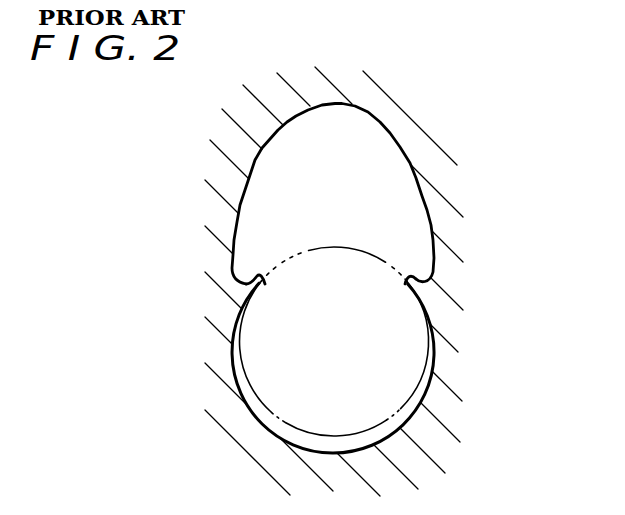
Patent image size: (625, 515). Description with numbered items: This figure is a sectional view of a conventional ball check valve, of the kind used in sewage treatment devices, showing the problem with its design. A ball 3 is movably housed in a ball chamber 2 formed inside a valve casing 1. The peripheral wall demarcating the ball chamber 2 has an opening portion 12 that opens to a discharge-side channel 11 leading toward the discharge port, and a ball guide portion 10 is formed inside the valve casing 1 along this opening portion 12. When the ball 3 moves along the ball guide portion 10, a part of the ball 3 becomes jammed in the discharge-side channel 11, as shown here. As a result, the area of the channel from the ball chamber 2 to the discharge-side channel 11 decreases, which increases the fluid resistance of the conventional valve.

The valve casing 1 is at (215, 218).
The ball chamber 2 is at (245, 397).
The ball 3 is at (431, 324).
The ball guide portion 10 is at (404, 284).
The discharge-side channel 11 is at (385, 182).
The opening portion 12 is at (267, 272).